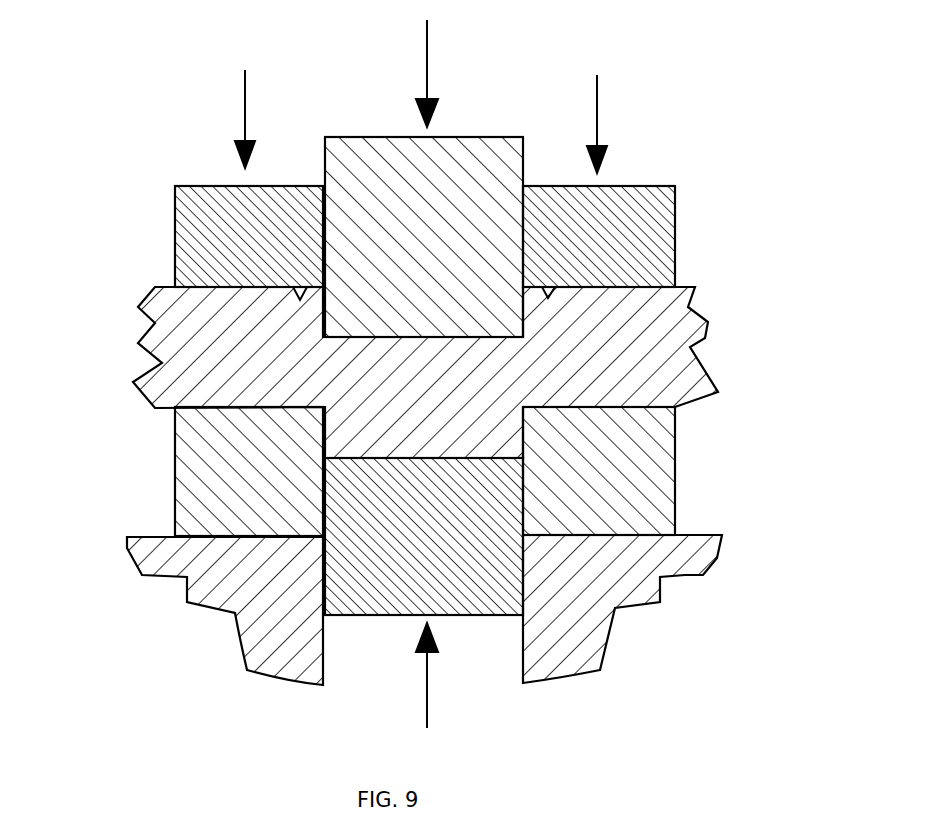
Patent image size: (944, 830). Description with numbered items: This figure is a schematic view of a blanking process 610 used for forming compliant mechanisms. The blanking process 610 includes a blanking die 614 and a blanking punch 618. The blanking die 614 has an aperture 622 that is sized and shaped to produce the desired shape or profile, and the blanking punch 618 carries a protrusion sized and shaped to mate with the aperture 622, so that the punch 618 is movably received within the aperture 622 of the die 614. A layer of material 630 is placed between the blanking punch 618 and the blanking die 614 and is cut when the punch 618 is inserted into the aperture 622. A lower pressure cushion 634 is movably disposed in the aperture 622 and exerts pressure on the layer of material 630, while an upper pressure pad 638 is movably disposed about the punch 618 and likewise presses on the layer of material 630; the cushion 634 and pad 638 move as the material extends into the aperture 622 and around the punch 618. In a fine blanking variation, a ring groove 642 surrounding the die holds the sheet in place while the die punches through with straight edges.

The blanking process 610 is at (150, 222).
The blanking punch 618 is at (435, 173).
The upper pressure pad 638 is at (617, 210).
The ring groove 642 is at (548, 293).
The layer of material 630 is at (668, 323).
The blanking die 614 is at (660, 432).
The aperture 622 is at (323, 475).
The lower pressure cushion 634 is at (497, 582).